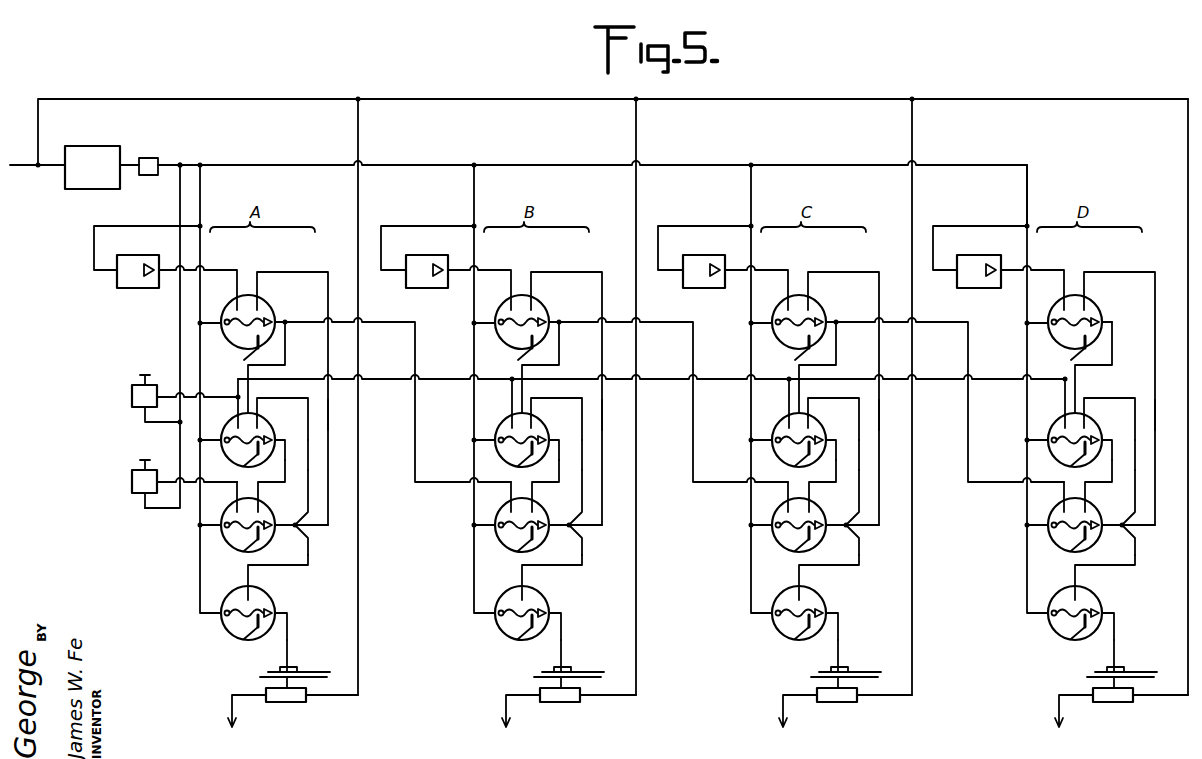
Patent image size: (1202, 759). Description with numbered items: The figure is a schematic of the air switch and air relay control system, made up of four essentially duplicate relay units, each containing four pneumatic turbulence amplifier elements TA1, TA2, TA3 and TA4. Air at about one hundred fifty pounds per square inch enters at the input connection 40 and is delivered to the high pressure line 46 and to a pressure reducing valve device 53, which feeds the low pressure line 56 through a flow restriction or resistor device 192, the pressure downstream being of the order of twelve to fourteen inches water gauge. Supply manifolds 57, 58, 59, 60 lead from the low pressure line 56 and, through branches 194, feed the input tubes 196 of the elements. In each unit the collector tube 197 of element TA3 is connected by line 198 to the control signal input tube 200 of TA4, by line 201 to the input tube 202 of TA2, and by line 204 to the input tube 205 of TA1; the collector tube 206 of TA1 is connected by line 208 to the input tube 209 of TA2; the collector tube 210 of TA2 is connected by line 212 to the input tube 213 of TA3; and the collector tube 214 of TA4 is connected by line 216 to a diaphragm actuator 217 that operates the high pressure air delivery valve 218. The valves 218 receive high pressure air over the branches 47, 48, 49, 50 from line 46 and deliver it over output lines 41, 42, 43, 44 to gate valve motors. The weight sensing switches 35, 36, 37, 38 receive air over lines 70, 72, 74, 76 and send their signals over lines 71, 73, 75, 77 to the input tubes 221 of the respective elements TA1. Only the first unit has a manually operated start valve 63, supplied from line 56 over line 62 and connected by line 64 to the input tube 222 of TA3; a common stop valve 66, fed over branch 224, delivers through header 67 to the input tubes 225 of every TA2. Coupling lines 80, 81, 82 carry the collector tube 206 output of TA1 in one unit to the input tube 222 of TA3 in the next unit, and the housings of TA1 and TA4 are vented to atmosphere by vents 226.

The input line 40 is at (22, 158).
The high pressure line 46 is at (464, 102).
The branch 47 is at (361, 190).
The branch 48 is at (639, 190).
The line 49 is at (915, 190).
The line 50 is at (1186, 182).
The pressure reducing valve device 53 is at (103, 179).
The low pressure line 56 is at (509, 168).
The supply manifold 57 is at (218, 388).
The supply manifold 58 is at (492, 388).
The stage supply line 59 is at (769, 388).
The stage supply line 60 is at (1045, 389).
The line 62 is at (179, 201).
The manually operated start valve 63 is at (132, 477).
The line 64 is at (222, 478).
The manually operable stop valve 66 is at (132, 392).
The header 67 is at (381, 378).
The air supply line 70 is at (147, 235).
The signal output line 71 is at (198, 267).
The line 72 is at (427, 235).
The line 73 is at (479, 267).
The line 74 is at (704, 235).
The line 75 is at (756, 267).
The line 76 is at (980, 235).
The line 77 is at (1032, 267).
The weight sensing switch 35 is at (138, 258).
The weight sensing switch 36 is at (427, 258).
The sensing switch 37 is at (704, 258).
The sensing switch 38 is at (979, 258).
The line 80 is at (390, 316).
The coupling line 81 is at (664, 316).
The branch connection 82 is at (941, 316).
The flow restriction or resistor device 192 is at (149, 157).
The branches 194 is at (593, 466).
The input tubes 196 is at (600, 468).
The collector tube 197 is at (704, 542).
The line 198 is at (725, 567).
The control signal input tube 200 is at (691, 582).
The line 201 is at (742, 444).
The control signal input tube 202 is at (705, 440).
The line 204 is at (752, 411).
The control signal input tube 205 is at (706, 398).
The collector tube 206 is at (713, 308).
The line 208 is at (699, 367).
The control signal input tube 209 is at (696, 419).
The collector tube 210 is at (660, 448).
The line 212 is at (726, 472).
The control signal input tube 213 is at (702, 497).
The collector tube 214 is at (718, 616).
The line 216 is at (727, 647).
The diaphragm actuator or motor 217 is at (718, 667).
The high pressure air delivery valve 218 is at (727, 708).
The control signal input tube 221 is at (633, 295).
The control signal input tube 222 is at (634, 497).
The branch 224 is at (150, 418).
The control signal input tube 225 is at (636, 397).
The vent 226 is at (646, 499).
The line 41 is at (228, 711).
The line 42 is at (502, 711).
The line 43 is at (779, 711).
The output line 44 is at (1055, 711).
The turbulence amplifier element TA1 is at (652, 328).
The turbulence amplifier element TA2 is at (670, 424).
The turbulence amplifier element TA3 is at (654, 532).
The turbulence amplifier element TA4 is at (637, 621).